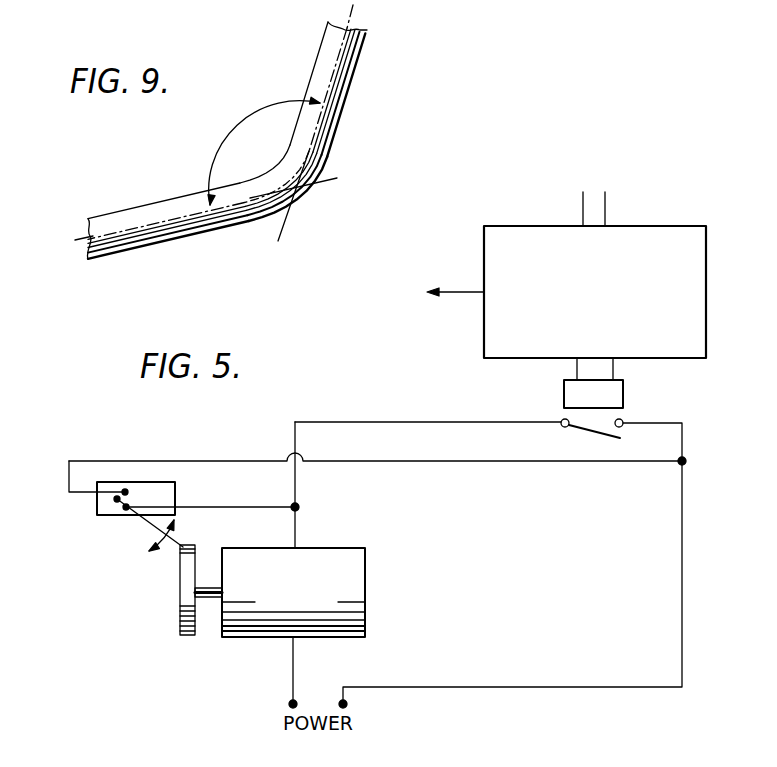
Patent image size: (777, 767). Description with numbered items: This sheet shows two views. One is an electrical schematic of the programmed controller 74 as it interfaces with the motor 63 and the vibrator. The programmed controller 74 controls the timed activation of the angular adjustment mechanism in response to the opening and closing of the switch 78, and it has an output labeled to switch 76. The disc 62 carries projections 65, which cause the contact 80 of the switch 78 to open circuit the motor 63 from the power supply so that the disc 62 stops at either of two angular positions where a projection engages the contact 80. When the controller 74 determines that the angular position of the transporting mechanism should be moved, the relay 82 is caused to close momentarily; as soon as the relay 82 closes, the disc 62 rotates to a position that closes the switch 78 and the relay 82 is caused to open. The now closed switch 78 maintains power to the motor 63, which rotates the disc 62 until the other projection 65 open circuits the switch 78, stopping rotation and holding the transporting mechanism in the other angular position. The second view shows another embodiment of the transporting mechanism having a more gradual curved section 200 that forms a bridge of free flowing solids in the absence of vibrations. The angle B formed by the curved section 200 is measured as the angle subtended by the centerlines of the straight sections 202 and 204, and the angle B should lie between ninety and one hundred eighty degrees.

In FIG. 9, the curved section 200 is at (258, 177).
In FIG. 9, the straight section 202 is at (167, 241).
In FIG. 9, the straight section 204 is at (351, 85).
In FIG. 9, the angle B is at (247, 113).
In FIG. 5, the programmed controller 74 is at (707, 283).
In FIG. 5, the switch connection 76 is at (399, 305).
In FIG. 5, the switch 78 is at (90, 527).
In FIG. 5, the contact 80 is at (123, 508).
In FIG. 5, the relay 82 is at (623, 395).
In FIG. 5, the disc 62 is at (180, 607).
In FIG. 5, the motor 63 is at (353, 583).
In FIG. 5, the projections 65 is at (185, 637).